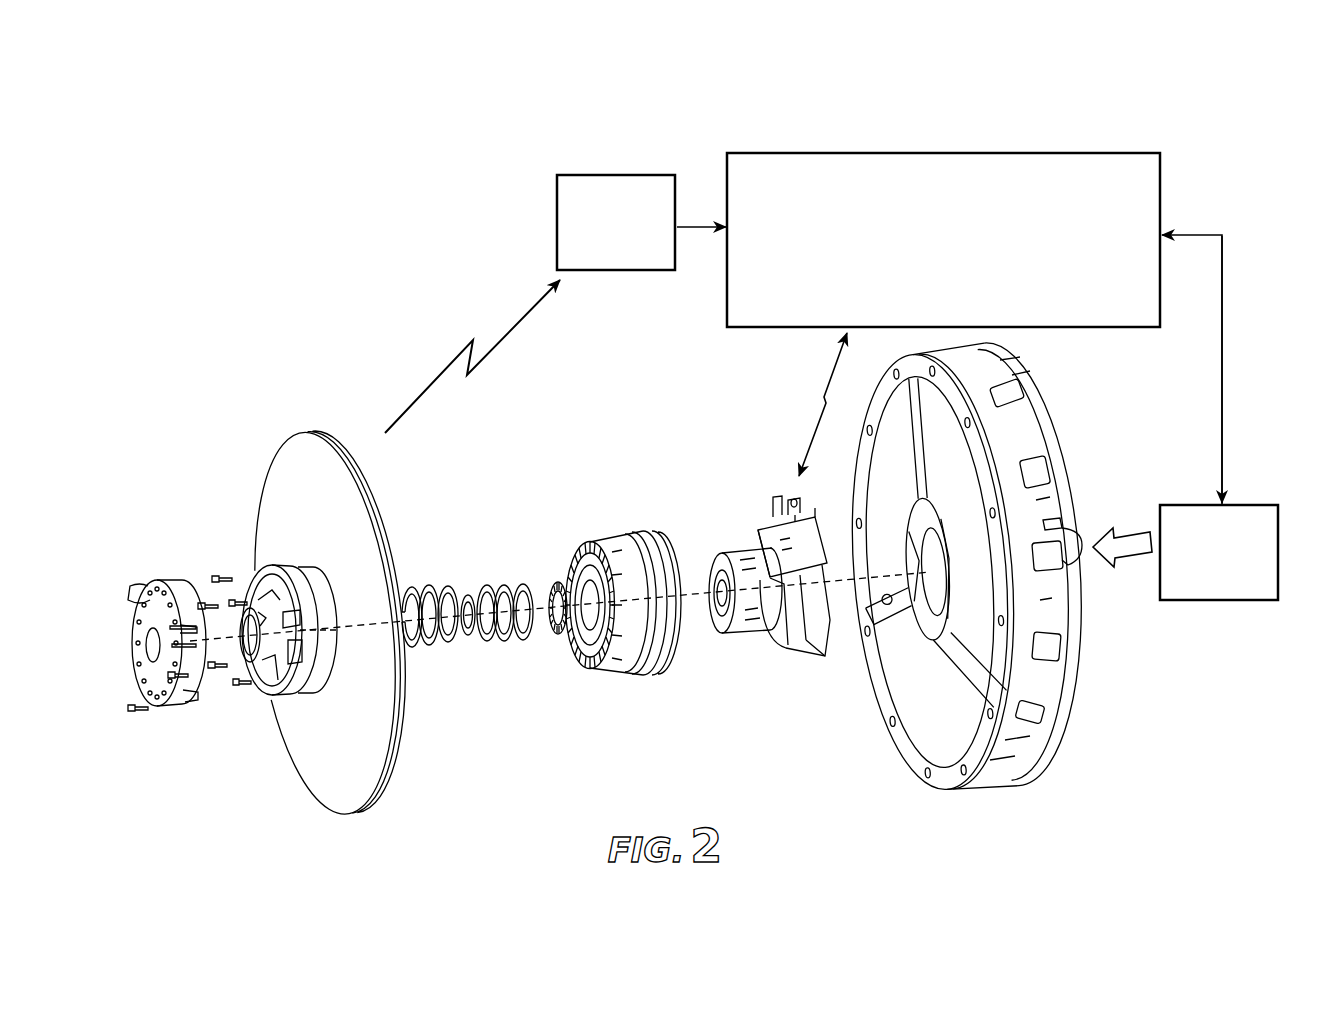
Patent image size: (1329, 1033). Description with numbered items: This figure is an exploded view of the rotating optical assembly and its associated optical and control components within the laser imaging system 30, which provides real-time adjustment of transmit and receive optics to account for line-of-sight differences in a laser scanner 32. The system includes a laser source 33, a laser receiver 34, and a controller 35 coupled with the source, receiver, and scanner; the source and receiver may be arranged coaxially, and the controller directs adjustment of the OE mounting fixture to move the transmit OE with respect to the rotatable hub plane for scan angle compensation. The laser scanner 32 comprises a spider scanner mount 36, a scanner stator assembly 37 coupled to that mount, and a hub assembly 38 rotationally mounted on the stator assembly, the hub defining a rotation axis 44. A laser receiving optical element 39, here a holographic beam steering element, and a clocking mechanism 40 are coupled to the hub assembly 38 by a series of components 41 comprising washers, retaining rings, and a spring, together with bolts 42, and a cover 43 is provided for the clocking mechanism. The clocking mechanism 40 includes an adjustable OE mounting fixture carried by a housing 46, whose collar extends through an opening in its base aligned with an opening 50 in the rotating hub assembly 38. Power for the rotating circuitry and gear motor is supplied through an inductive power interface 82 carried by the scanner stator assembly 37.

The laser imaging system 30 is at (232, 114).
The laser scanner 32 is at (246, 409).
The laser source 33 is at (1256, 505).
The laser receiver 34 is at (588, 175).
The controller 35 is at (1166, 153).
The spider scanner mount 36 is at (1075, 628).
The scanner stator assembly 37 is at (765, 665).
The hub assembly 38 is at (641, 511).
The laser receiving optical element 39 is at (325, 434).
The clocking mechanism 40 is at (254, 566).
The series of components 41 is at (563, 578).
The bolts 42 is at (215, 574).
The cover 43 is at (155, 583).
The rotation axis 44 is at (690, 592).
The housing 46 is at (272, 692).
The opening 50 is at (570, 642).
The inductive power interface 82 is at (767, 507).